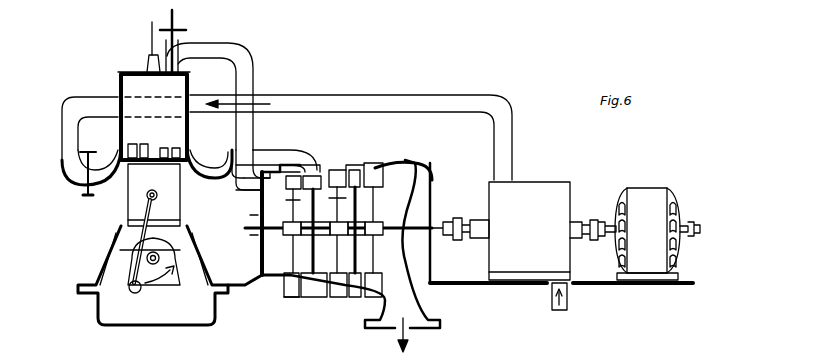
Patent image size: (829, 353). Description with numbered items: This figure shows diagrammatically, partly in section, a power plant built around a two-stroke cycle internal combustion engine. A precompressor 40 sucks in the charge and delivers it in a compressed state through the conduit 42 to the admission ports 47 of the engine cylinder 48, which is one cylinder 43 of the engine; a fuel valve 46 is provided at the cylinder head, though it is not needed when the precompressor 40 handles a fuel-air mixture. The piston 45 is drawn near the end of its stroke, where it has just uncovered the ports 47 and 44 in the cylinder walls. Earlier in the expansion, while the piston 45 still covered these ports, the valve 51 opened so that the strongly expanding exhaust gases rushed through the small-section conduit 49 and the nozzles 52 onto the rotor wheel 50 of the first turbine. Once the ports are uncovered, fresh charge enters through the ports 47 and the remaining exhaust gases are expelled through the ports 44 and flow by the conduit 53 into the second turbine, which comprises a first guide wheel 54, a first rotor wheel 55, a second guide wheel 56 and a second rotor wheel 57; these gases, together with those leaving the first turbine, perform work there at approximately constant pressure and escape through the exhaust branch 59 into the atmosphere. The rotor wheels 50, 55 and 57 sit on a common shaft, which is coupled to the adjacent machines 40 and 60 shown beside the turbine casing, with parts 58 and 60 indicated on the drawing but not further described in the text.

The pre-compressor 40 is at (524, 231).
The conduit 42 is at (396, 97).
The cylinder 43 is at (120, 79).
The ports 44 is at (190, 148).
The piston 45 is at (140, 170).
The fuel valve 46 is at (150, 62).
The admission ports 47 is at (120, 140).
The engine cylinder 48 is at (155, 127).
The conduit 49 is at (254, 70).
The rotor wheel 50 is at (292, 252).
The valve 51 is at (175, 18).
The nozzles 52 is at (244, 186).
The conduit 53 is at (295, 146).
The first guide wheel 54 is at (325, 170).
The first rotor wheel 55 is at (330, 280).
The second guide wheel 56 is at (362, 160).
The second rotor wheel 57 is at (375, 210).
The valve 58 is at (300, 290).
The exhaust branch 59 is at (406, 323).
The motor 60 is at (657, 234).